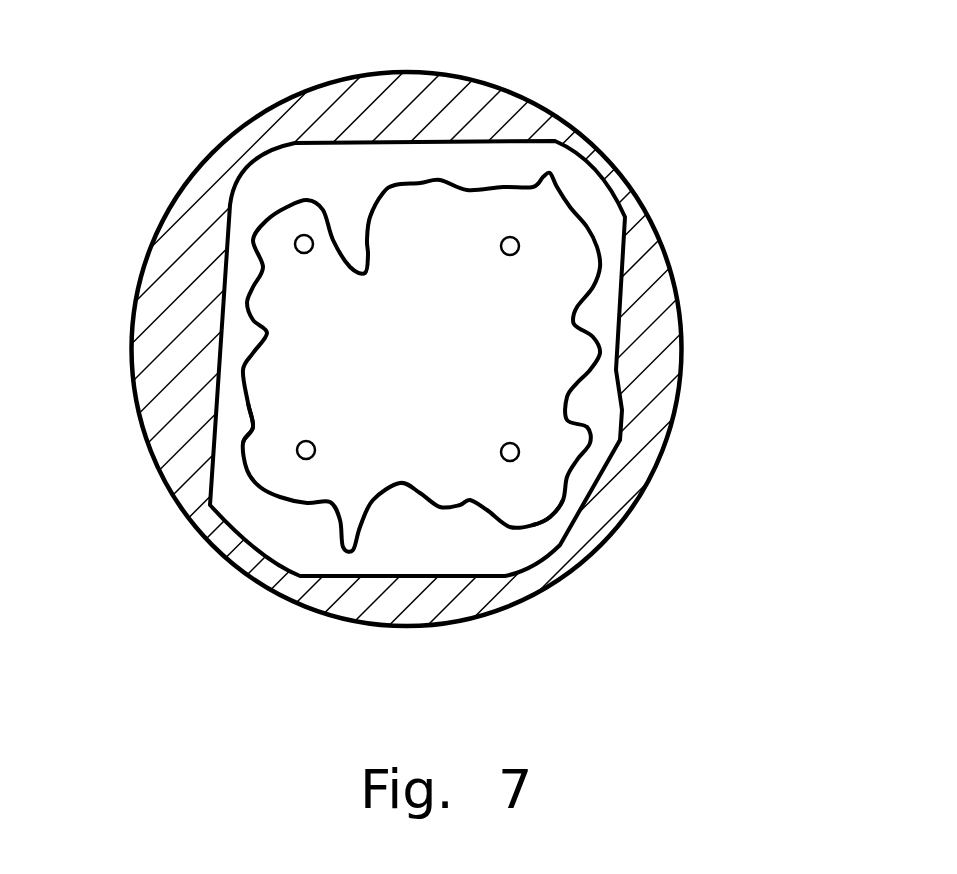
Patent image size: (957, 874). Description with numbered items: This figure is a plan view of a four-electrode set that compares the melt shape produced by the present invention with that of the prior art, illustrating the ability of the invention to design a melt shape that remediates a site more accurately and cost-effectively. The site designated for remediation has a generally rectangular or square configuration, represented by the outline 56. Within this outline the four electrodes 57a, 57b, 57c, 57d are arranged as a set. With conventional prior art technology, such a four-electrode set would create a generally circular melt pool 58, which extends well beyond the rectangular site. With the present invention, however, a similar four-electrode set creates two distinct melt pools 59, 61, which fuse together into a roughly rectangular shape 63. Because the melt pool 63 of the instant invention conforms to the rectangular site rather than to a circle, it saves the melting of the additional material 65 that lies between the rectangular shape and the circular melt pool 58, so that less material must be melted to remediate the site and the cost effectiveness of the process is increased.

The outline 56 is at (547, 517).
The electrode 57a is at (300, 462).
The electrode 57b is at (298, 240).
The electrode 57c is at (517, 237).
The electrode 57d is at (512, 463).
The circular melt pool 58 is at (678, 293).
The melt pool 59 is at (273, 427).
The melt pool 61 is at (530, 325).
The rectangular melt pool shape 63 is at (630, 210).
The additional material 65 is at (450, 103).